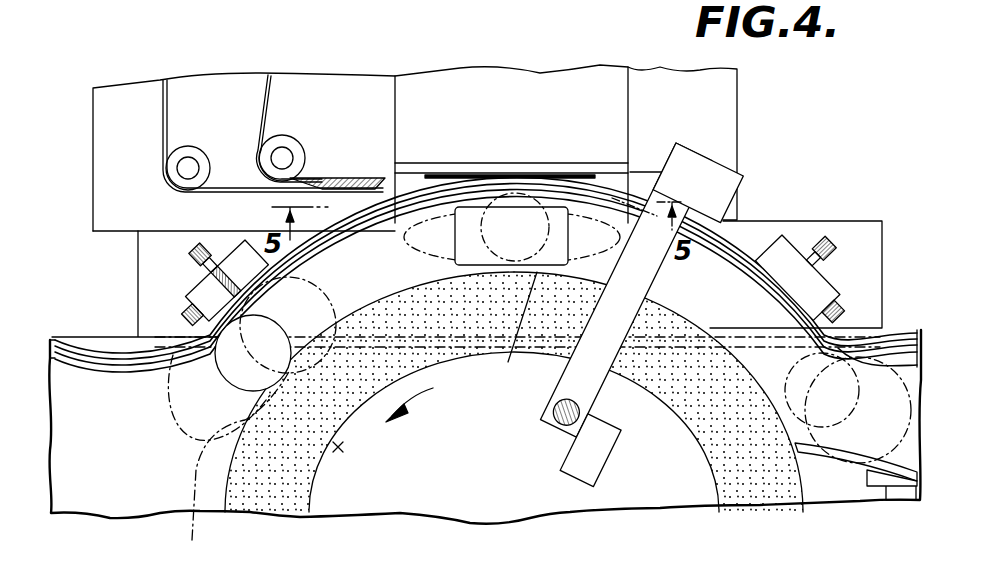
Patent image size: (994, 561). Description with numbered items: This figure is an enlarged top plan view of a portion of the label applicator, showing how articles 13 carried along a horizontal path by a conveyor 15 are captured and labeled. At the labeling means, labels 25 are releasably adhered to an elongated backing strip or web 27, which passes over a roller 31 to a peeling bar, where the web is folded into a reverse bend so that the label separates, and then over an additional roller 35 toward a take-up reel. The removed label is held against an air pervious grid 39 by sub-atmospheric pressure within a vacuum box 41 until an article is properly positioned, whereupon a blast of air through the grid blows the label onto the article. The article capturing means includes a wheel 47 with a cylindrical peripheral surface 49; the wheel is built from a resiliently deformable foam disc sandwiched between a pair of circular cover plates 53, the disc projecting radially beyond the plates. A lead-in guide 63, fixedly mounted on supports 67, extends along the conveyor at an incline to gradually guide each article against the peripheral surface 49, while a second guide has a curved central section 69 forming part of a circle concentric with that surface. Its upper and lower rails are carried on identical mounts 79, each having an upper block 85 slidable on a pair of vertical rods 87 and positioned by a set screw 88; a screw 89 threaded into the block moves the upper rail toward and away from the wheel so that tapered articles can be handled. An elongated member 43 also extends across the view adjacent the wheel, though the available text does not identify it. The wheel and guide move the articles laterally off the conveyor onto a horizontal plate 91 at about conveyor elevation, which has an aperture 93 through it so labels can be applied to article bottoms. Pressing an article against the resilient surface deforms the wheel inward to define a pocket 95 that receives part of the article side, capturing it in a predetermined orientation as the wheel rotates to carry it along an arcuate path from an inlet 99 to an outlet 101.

The article 13 is at (191, 492).
The conveyor 15 is at (123, 490).
The label 25 is at (274, 104).
The backing strip or web 27 is at (262, 95).
The roller 31 is at (303, 140).
The additional roller 35 is at (190, 147).
The air pervious grid 39 is at (450, 165).
The vacuum box 41 is at (518, 77).
The pivot arm 43 is at (583, 475).
The wheel 47 is at (747, 493).
The cylindrical peripheral surface 49 is at (285, 505).
The circular cover plate 53 is at (438, 503).
The lead-in guide 63 is at (843, 462).
The support 67 is at (903, 490).
The central section 69 is at (600, 190).
The mount 79 is at (842, 270).
The upper block 85 is at (192, 296).
The vertical rod 87 is at (245, 257).
The set screw 88 is at (180, 318).
The screw 89 is at (193, 258).
The horizontal plate 91 is at (363, 274).
The aperture 93 is at (457, 250).
The pocket 95 is at (344, 450).
The inlet 99 is at (828, 407).
The outlet 101 is at (172, 428).